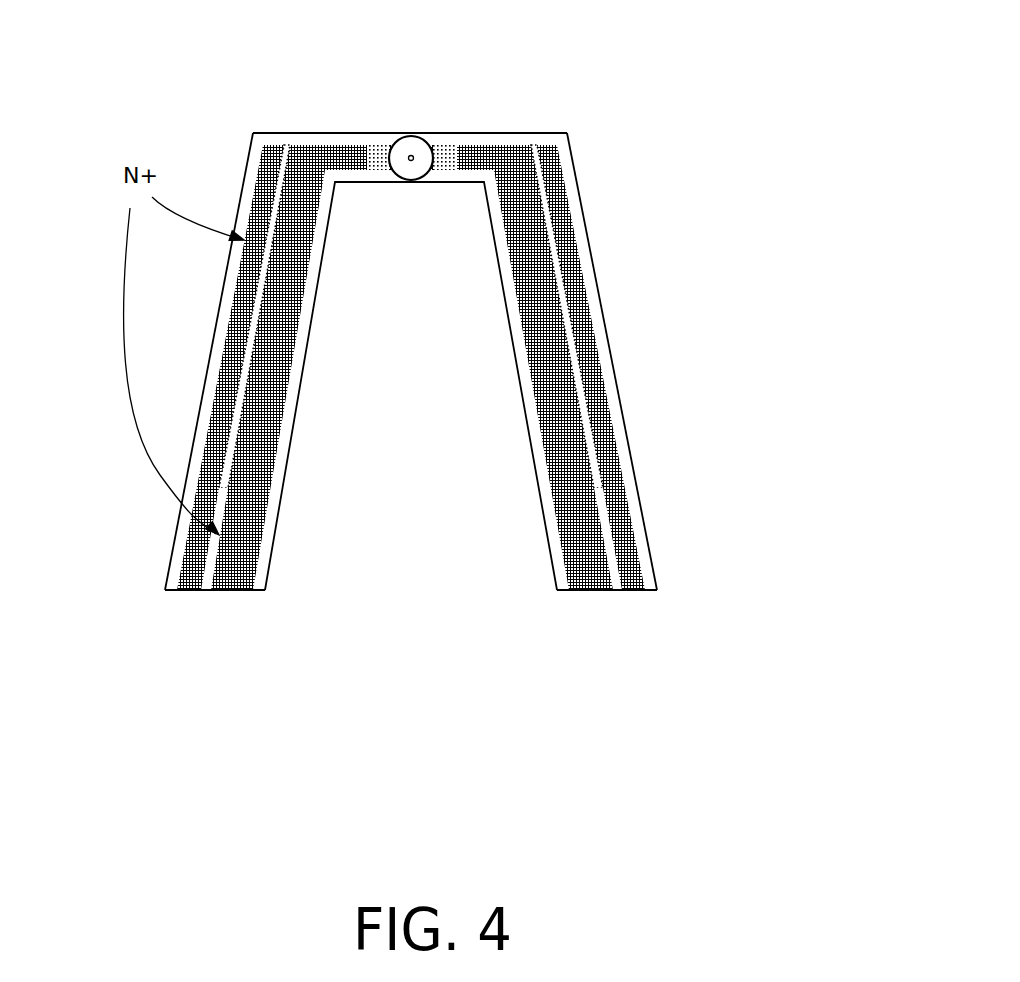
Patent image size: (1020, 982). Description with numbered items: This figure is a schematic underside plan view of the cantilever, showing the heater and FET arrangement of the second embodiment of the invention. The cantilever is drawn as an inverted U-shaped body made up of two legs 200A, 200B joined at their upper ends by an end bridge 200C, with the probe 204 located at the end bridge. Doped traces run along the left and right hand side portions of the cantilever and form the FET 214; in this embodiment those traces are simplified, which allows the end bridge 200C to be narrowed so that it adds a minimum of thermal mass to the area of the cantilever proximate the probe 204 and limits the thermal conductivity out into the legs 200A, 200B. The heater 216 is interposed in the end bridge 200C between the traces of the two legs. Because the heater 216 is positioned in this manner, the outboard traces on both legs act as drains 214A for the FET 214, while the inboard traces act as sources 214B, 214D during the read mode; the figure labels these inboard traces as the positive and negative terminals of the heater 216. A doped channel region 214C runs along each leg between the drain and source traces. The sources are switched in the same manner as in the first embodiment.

The first leg segment of U-shaped structure 200A is at (177, 552).
The second leg segment of U-shaped structure 200B is at (643, 517).
The end bridge 200C is at (370, 131).
The probe 204 is at (407, 167).
The FET 214 is at (603, 222).
The FET drain 214A is at (186, 606).
The FET source / heater positive terminal 214B is at (244, 606).
The FET channel 214C is at (278, 197).
The FET source / heater negative terminal 214D is at (584, 606).
The heater 216 is at (441, 145).